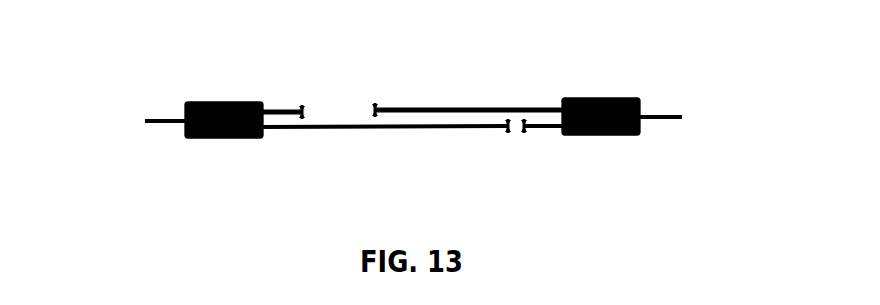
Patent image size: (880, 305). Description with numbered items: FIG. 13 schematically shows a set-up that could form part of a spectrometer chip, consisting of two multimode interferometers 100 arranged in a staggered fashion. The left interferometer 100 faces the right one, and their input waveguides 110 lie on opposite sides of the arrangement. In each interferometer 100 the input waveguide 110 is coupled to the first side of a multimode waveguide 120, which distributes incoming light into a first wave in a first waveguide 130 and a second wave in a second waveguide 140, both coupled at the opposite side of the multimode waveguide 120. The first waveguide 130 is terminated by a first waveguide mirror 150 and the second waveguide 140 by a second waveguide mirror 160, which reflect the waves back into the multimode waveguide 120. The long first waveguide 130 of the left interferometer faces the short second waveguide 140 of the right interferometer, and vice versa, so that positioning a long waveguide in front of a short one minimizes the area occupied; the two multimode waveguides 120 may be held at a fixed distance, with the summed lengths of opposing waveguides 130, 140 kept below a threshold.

The multimode interferometer 100 is at (150, 54).
The input waveguide 110 is at (146, 119).
The multimode waveguide 120 is at (221, 138).
The first waveguide 130 is at (467, 107).
The second waveguide 140 is at (283, 111).
The first waveguide mirror 150 is at (521, 128).
The second waveguide mirror 160 is at (372, 104).